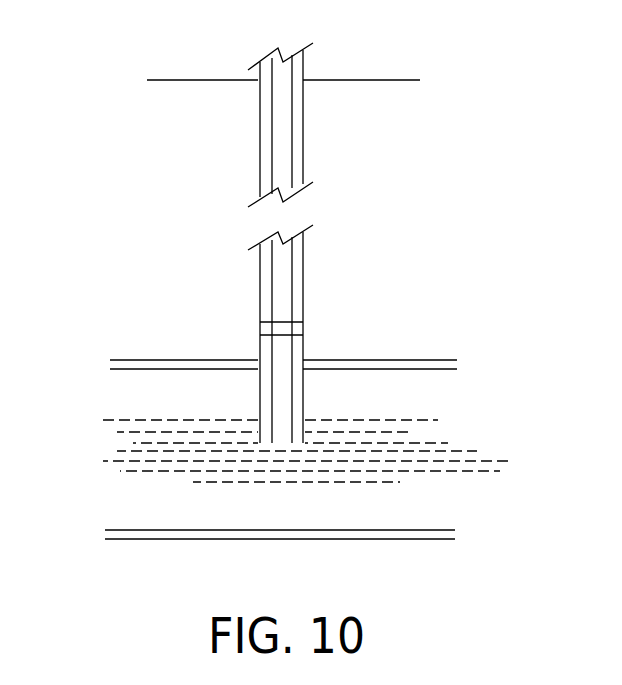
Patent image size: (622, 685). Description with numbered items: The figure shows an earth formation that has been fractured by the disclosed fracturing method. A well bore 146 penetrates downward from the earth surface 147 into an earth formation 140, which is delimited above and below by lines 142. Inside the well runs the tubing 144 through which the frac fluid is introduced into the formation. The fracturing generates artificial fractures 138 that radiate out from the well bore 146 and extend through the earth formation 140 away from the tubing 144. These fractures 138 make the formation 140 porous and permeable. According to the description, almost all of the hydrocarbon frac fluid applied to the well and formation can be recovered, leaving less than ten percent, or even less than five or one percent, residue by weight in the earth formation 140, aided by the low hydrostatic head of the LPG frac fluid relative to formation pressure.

The earth surface 147 is at (178, 80).
The well bore 146 is at (258, 118).
The tubing 144 is at (260, 313).
The lines 142 is at (125, 358).
The artificial fractures 138 is at (140, 418).
The earth formation 140 is at (420, 498).